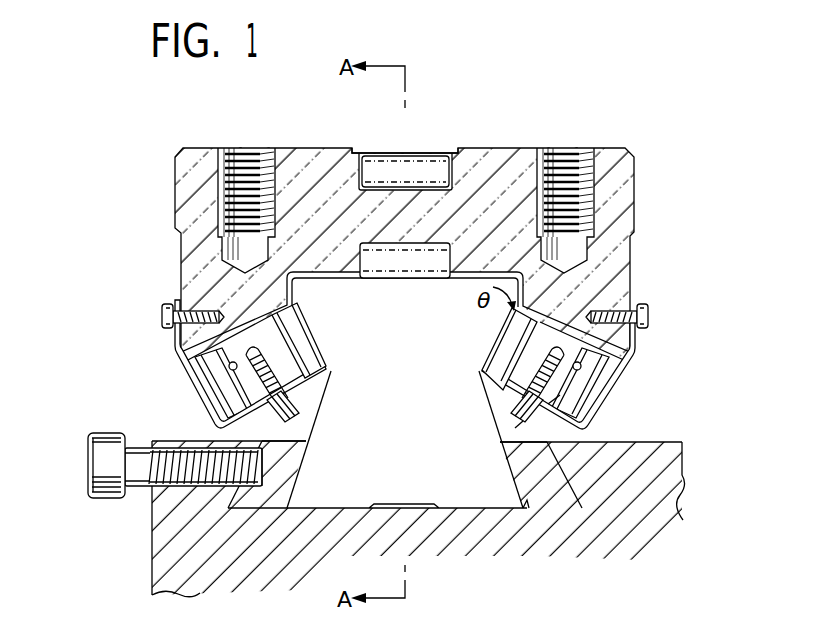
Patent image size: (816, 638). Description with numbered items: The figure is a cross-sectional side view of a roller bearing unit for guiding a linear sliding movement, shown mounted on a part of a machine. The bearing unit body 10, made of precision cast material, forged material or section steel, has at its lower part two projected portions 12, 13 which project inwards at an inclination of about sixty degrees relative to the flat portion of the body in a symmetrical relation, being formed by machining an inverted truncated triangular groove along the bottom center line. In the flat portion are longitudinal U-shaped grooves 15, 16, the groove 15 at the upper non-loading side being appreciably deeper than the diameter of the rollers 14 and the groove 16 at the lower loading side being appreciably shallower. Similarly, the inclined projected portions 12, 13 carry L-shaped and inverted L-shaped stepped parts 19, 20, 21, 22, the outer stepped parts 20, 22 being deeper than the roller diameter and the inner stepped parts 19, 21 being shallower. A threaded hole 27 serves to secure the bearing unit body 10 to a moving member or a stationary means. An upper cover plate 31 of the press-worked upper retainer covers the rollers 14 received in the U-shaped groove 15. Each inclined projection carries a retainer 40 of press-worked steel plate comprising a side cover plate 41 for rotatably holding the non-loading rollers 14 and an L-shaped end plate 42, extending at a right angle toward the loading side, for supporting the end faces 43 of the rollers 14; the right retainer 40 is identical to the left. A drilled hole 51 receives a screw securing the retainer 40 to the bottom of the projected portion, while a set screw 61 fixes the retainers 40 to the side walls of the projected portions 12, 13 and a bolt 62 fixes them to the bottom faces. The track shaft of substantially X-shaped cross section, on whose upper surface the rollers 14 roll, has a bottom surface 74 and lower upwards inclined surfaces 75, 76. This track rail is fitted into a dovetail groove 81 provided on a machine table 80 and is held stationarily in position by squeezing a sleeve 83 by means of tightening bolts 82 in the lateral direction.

The bearing unit body 10 is at (603, 146).
The projected portion 12 is at (507, 420).
The projected portion 13 is at (405, 439).
The rollers 14 is at (443, 172).
The U-shaped groove 15 is at (376, 185).
The U-shaped groove 16 is at (417, 243).
The inner stepped part 19 is at (504, 391).
The outer stepped part 20 is at (543, 446).
The inner stepped part 21 is at (298, 333).
The outer stepped part 22 is at (230, 367).
The threaded hole 27 is at (234, 178).
The upper cover plate 31 is at (418, 150).
The retainer 40 is at (408, 404).
The side cover plate 41 is at (208, 412).
The L-shaped end plate 42 is at (305, 382).
The end faces 43 is at (495, 347).
The drilled hole 51 is at (496, 439).
The set screw 61 is at (166, 306).
The bolt 62 is at (298, 414).
The bottom surface 74 is at (320, 506).
The lower upwards inclined surface 75 is at (508, 472).
The lower upwards inclined surface 76 is at (313, 452).
The machine table 80 is at (152, 541).
The dovetail groove 81 is at (527, 511).
The tightening bolts 82 is at (100, 452).
The sleeve 83 is at (236, 506).